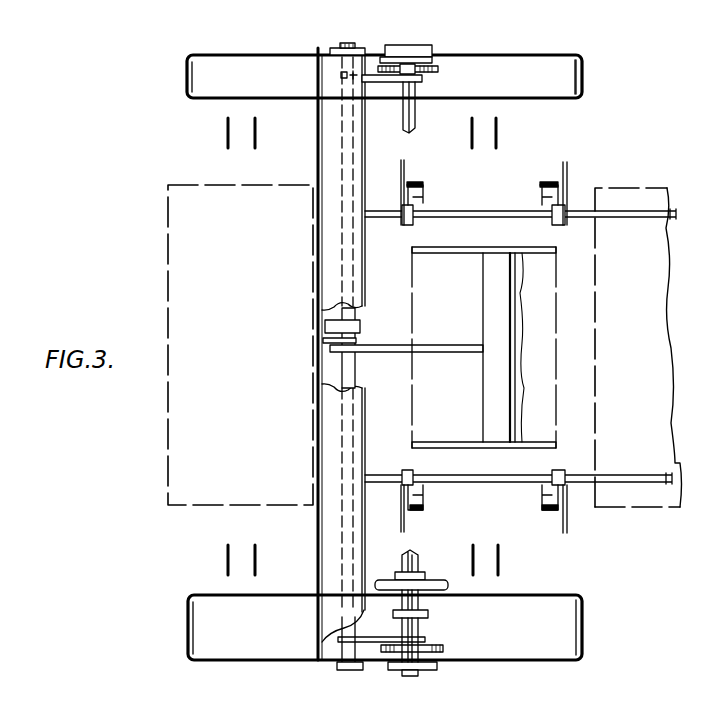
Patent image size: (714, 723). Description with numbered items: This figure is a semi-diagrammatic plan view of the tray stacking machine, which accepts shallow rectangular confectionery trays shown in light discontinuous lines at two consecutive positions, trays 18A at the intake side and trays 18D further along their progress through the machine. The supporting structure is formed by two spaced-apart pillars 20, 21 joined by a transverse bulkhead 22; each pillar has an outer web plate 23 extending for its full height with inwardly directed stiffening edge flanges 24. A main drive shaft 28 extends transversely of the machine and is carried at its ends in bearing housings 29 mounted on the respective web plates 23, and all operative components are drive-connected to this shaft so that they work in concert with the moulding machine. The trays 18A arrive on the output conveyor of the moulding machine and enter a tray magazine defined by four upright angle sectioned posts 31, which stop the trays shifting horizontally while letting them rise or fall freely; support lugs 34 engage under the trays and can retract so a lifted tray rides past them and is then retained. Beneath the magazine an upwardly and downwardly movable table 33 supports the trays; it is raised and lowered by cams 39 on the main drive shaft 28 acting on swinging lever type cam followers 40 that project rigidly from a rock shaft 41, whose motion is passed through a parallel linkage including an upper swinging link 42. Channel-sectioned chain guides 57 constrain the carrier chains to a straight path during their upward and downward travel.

The trays in A position 18A is at (638, 347).
The trays in D position 18D is at (240, 345).
The pillar 20 is at (541, 53).
The pillar 21 is at (545, 674).
The transverse bulkhead 22 is at (318, 546).
The outer web plate 23 is at (262, 56).
The stiffening edge flanges 24 is at (185, 76).
The main drive shaft 28 is at (421, 629).
The bearing housings 29 is at (408, 50).
The upright angle sectioned posts 31 is at (413, 182).
The table 33 is at (505, 334).
The support lug 34 is at (404, 221).
The cams 39 is at (439, 67).
The cam followers 40 is at (370, 76).
The rock shaft 41 is at (343, 358).
The upper swinging link 42 is at (435, 346).
The chain guides 57 is at (225, 132).